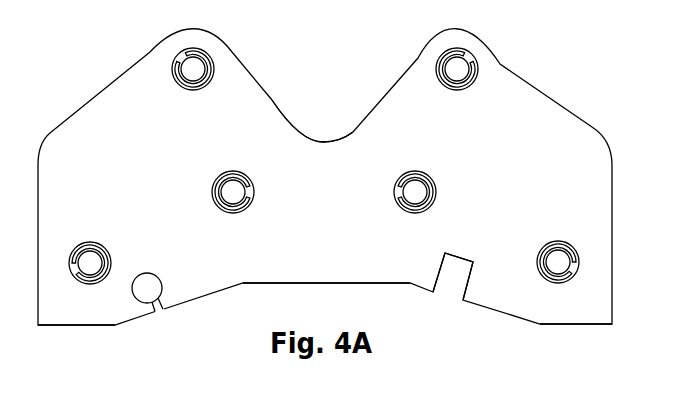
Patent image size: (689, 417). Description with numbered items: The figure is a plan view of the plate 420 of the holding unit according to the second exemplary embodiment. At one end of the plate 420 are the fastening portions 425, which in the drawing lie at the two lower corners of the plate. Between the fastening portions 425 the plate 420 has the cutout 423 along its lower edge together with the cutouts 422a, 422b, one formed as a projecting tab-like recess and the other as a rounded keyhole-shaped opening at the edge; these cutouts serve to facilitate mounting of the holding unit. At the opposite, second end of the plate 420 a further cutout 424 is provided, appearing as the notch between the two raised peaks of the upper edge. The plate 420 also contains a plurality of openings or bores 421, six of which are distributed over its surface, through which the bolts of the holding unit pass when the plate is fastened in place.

The plate 420 is at (563, 159).
The openings or bores 421 is at (472, 77).
The cutout 422a is at (458, 253).
The cutout 422b is at (154, 275).
The cutout 423 is at (307, 283).
The cutout 424 is at (272, 102).
The fastening portions 425 is at (618, 372).